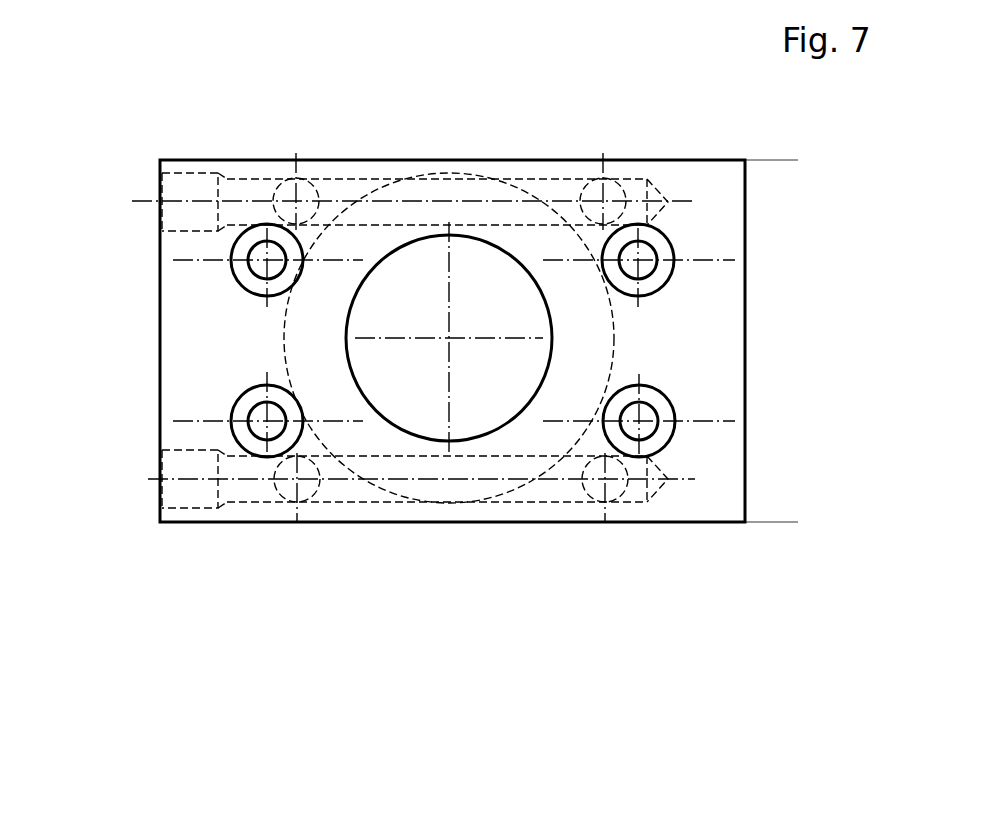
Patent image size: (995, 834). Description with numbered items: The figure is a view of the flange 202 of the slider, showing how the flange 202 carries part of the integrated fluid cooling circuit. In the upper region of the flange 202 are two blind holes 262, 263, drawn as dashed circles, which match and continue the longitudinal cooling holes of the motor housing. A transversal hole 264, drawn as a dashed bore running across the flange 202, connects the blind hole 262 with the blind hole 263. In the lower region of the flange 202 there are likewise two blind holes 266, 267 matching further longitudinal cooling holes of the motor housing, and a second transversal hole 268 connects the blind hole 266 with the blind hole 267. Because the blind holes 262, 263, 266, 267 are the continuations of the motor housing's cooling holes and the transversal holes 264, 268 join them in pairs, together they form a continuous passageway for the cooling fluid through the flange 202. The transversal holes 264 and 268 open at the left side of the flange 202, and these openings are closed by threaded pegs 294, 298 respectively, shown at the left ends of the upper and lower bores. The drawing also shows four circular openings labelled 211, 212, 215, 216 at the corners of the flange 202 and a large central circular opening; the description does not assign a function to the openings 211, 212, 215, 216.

The flange 202 is at (568, 573).
The bolt hole 211 is at (235, 272).
The bolt hole 212 is at (672, 243).
The bolt hole 215 is at (673, 427).
The bolt hole 216 is at (233, 405).
The blind hole 262 is at (303, 177).
The blind hole 263 is at (608, 177).
The transversal hole 264 is at (356, 177).
The blind hole 266 is at (605, 502).
The blind hole 267 is at (297, 503).
The transversal hole 268 is at (350, 503).
The threaded peg 294 is at (160, 203).
The threaded peg 298 is at (160, 485).